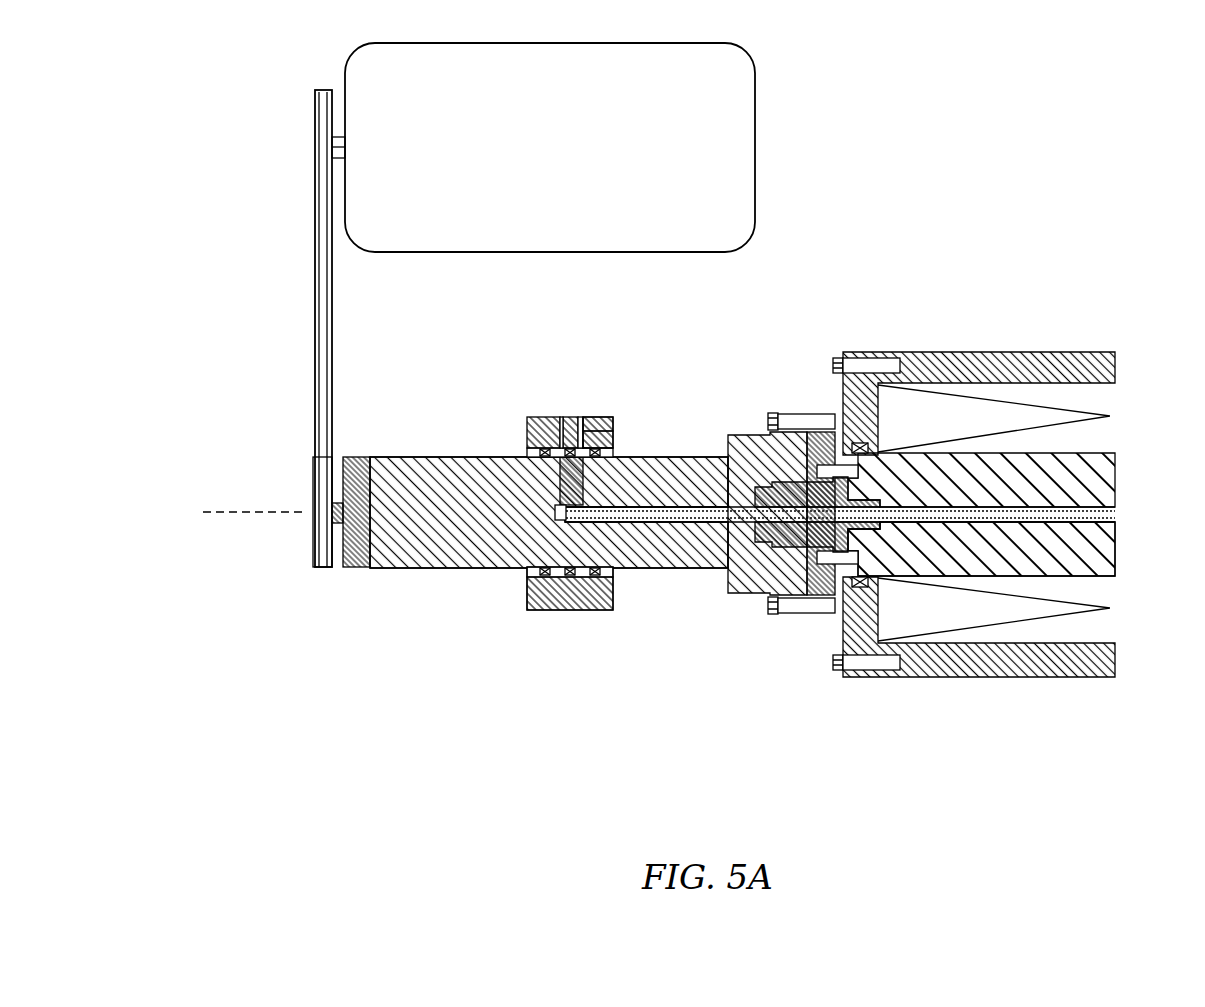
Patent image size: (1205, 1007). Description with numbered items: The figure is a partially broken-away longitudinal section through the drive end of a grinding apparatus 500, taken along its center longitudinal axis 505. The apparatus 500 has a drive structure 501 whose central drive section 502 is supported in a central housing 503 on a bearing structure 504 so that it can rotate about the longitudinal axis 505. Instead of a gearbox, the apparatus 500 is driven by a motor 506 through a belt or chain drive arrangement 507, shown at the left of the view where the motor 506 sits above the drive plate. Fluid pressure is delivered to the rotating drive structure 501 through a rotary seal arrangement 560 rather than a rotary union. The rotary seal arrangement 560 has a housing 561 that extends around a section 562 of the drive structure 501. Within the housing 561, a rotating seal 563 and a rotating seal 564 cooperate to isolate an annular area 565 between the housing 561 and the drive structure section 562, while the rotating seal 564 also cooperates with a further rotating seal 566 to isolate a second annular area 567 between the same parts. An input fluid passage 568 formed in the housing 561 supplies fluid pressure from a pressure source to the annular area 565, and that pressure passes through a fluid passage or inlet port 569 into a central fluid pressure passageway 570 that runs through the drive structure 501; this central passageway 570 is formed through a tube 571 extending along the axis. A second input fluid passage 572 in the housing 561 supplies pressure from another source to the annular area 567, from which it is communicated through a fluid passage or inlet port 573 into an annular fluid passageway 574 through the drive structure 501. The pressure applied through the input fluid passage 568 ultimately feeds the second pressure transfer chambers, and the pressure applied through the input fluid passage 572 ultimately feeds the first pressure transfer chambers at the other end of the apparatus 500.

The apparatus 500 is at (1082, 99).
The drive structure 501 is at (637, 609).
The central drive section 502 is at (975, 557).
The central housing 503 is at (1010, 348).
The bearing structure 504 is at (1043, 395).
The longitudinal axis 505 is at (250, 513).
The motor 506 is at (571, 166).
The belt or chain drive arrangement 507 is at (305, 288).
The rotary seal arrangement 560 is at (580, 658).
The housing 561 is at (537, 612).
The drive structure section 562 is at (405, 569).
The rotating seal 563 is at (535, 448).
The rotating seal 564 is at (582, 400).
The annular area 565 is at (543, 420).
The rotating seal 566 is at (598, 457).
The annular area 567 is at (593, 418).
The input fluid passage 568 is at (557, 417).
The fluid passage (inlet port) 569 is at (561, 484).
The central fluid pressure passageway 570 is at (706, 515).
The tube 571 is at (703, 518).
The input fluid passage 572 is at (588, 417).
The fluid passage (inlet port) 573 is at (561, 484).
The annular fluid passageway 574 is at (728, 510).